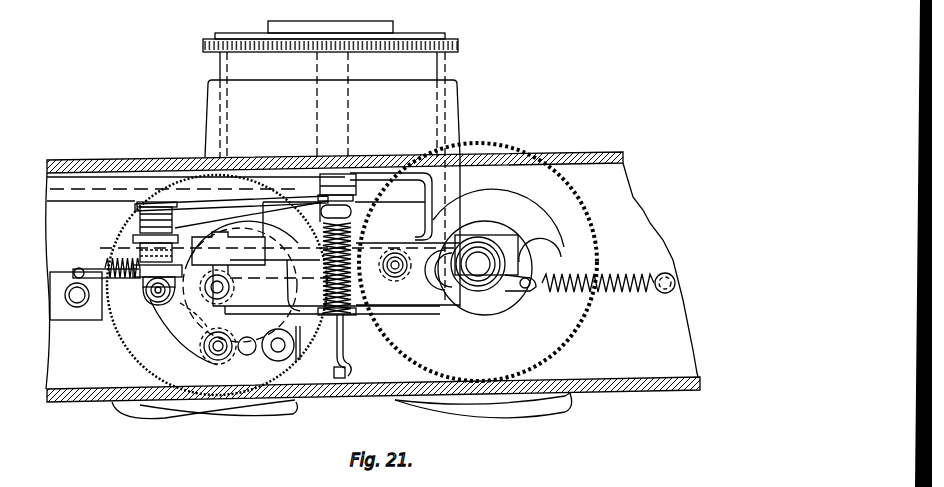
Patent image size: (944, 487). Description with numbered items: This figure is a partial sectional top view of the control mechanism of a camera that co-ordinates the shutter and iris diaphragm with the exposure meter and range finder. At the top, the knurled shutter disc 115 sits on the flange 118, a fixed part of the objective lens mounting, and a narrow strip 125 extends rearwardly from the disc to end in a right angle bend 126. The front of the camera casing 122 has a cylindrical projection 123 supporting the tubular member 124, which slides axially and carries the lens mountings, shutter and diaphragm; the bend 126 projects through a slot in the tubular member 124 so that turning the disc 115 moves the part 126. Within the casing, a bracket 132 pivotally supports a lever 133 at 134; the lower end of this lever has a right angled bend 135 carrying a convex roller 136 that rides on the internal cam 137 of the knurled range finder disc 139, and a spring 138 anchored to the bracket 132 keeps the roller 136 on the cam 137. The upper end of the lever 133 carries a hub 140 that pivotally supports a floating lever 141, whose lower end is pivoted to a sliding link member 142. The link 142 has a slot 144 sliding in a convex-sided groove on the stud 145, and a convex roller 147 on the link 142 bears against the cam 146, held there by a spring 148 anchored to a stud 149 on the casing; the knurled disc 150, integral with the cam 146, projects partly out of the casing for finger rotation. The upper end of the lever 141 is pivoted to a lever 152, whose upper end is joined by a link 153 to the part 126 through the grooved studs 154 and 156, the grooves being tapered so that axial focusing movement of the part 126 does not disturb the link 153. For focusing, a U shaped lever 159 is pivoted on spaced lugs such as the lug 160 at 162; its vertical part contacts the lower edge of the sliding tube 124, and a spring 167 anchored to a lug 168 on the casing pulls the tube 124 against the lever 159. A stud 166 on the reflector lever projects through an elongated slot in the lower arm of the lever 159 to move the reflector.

The knurled disc 115 is at (460, 45).
The flange 118 is at (423, 32).
The camera casing 122 is at (563, 152).
The cylindrical projection 123 is at (458, 97).
The tubular member 124 is at (447, 66).
The narrow strip 125 is at (352, 117).
The right angle bend 126 is at (352, 156).
The bracket 132 is at (76, 270).
The lever 133 is at (138, 255).
The pivot 134 is at (156, 310).
The right angled bend 135 is at (160, 323).
The convex roller 136 is at (150, 311).
The internal cam 137 is at (173, 344).
The spring 138 is at (145, 291).
The knurled disc 139 is at (118, 334).
The hub 140 is at (133, 268).
The lever 141 is at (136, 241).
The sliding link member 142 is at (383, 303).
The slot 144 is at (510, 258).
The stud 145 is at (493, 292).
The cam 146 is at (474, 313).
The convex roller 147 is at (405, 275).
The spring 148 is at (623, 294).
The stud 149 is at (677, 283).
The knurled disc 150 is at (500, 150).
The lever 152 is at (133, 208).
The link 153 is at (264, 218).
The grooved stud 154 is at (186, 230).
The grooved stud 156 is at (365, 219).
The U shaped lever 159 is at (345, 348).
The lug 160 is at (268, 371).
The pivot 162 is at (285, 352).
The stud 166 is at (216, 365).
The spring 167 is at (322, 263).
The lug 168 is at (343, 400).